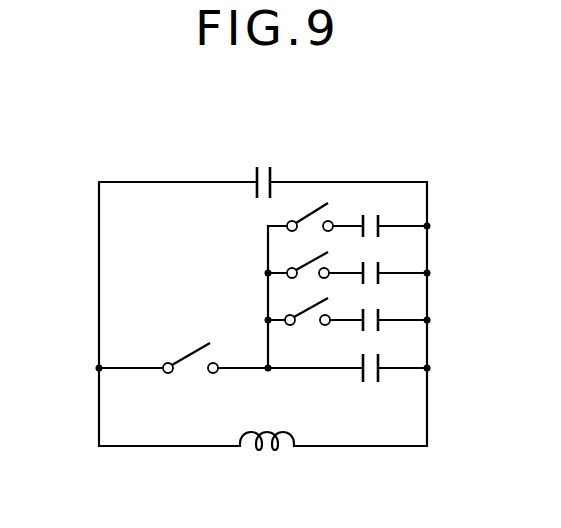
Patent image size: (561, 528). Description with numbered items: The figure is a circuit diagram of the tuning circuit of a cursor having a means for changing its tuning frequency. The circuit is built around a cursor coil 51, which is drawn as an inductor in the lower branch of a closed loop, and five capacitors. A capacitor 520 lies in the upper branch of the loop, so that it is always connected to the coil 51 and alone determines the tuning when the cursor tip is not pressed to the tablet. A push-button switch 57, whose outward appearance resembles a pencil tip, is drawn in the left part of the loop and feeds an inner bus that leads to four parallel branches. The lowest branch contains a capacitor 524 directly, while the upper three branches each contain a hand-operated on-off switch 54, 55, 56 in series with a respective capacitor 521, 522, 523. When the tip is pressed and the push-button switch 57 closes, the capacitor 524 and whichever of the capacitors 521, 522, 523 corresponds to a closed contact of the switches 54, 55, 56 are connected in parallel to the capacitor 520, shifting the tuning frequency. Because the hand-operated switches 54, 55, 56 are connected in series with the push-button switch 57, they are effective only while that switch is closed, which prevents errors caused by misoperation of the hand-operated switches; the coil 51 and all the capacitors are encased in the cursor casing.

The cursor coil 51 is at (265, 452).
The on-off switch 54 is at (306, 211).
The on-off switch 55 is at (303, 262).
The on-off switch 56 is at (308, 328).
The push-button switch 57 is at (178, 357).
The capacitor 520 is at (262, 161).
The capacitor 521 is at (382, 215).
The capacitor 522 is at (382, 266).
The capacitor 523 is at (382, 315).
The capacitor 524 is at (383, 378).